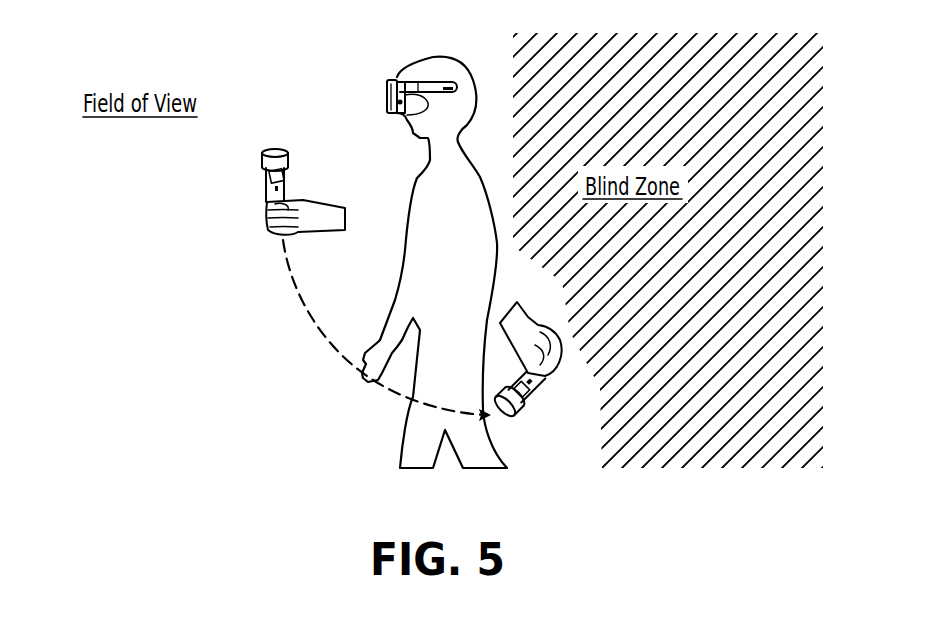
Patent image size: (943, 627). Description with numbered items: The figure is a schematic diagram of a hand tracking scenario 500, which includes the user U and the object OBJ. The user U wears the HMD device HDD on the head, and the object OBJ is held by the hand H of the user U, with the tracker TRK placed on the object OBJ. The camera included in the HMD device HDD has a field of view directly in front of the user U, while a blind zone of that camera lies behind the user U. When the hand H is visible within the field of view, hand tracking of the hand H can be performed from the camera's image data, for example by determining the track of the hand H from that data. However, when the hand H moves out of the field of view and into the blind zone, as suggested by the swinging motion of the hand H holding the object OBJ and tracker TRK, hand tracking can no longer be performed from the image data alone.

The HMD device HDD is at (396, 78).
The user U is at (461, 63).
The object OBJ is at (262, 152).
The tracker TRK is at (268, 180).
The hand H is at (270, 232).
The hand tracking scenario 500 is at (759, 507).